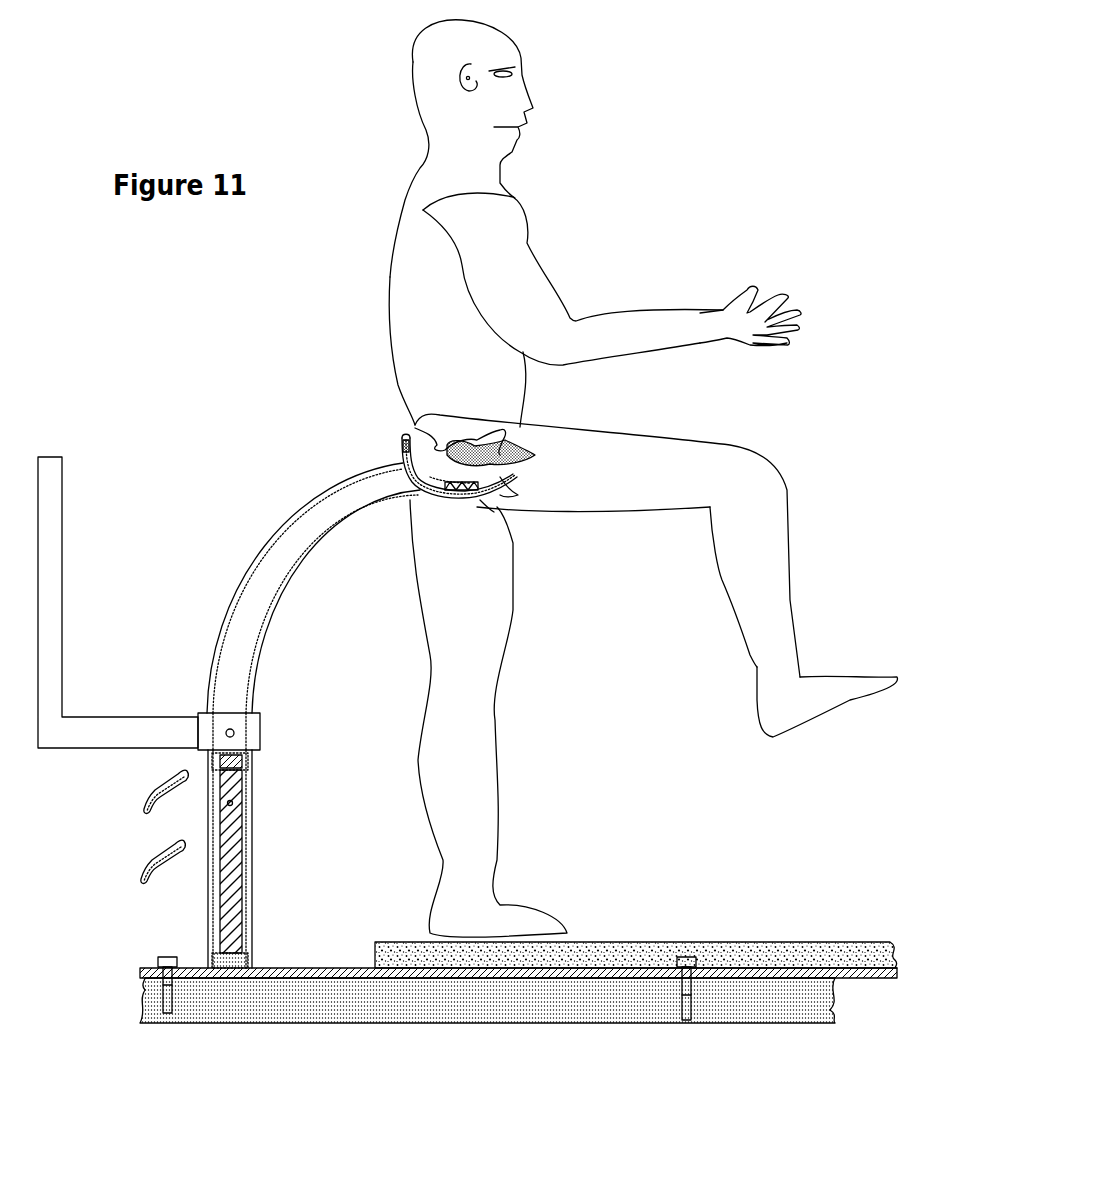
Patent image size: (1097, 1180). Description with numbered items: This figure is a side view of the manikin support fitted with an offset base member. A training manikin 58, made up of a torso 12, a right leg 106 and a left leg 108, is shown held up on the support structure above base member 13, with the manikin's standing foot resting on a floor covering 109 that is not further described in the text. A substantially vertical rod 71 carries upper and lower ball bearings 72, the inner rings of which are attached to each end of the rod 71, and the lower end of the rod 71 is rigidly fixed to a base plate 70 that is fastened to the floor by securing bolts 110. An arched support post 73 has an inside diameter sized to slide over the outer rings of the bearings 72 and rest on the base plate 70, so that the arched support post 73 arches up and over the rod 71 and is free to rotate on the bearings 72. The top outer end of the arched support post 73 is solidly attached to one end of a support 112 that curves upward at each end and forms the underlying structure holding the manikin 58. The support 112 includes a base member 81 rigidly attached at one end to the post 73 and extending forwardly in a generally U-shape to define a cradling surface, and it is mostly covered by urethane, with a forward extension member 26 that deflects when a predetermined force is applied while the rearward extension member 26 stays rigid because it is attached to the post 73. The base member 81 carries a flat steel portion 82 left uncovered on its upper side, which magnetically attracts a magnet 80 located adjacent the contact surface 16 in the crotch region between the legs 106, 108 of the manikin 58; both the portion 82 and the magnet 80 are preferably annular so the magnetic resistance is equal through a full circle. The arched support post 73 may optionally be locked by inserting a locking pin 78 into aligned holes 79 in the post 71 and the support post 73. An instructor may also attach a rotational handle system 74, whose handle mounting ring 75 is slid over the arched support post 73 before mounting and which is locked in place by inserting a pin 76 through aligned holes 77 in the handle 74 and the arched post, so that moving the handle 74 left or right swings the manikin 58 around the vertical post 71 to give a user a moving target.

The training manikin 58 is at (612, 478).
The torso 12 is at (415, 337).
The base member 13 is at (612, 470).
The right leg 106 is at (755, 567).
The left leg 108 is at (470, 762).
The magnet 80 is at (525, 447).
The extension member 26 is at (405, 447).
The support 112 is at (403, 460).
The flat steel portion 82 is at (460, 498).
The contact surface 16 is at (422, 492).
The base member 81 is at (493, 503).
The arched support post 73 is at (265, 637).
The handle mounting ring 75 is at (205, 717).
The rotational handle system 74 is at (150, 733).
The rod 71 is at (235, 900).
The ball bearings 72 is at (245, 953).
The pin 76 is at (200, 758).
The locking pin 78 is at (200, 833).
The aligned holes 77 is at (226, 736).
The holes 79 is at (227, 806).
The base plate 70 is at (290, 970).
The floor mat 109 is at (770, 952).
The securing bolts 110 is at (155, 966).